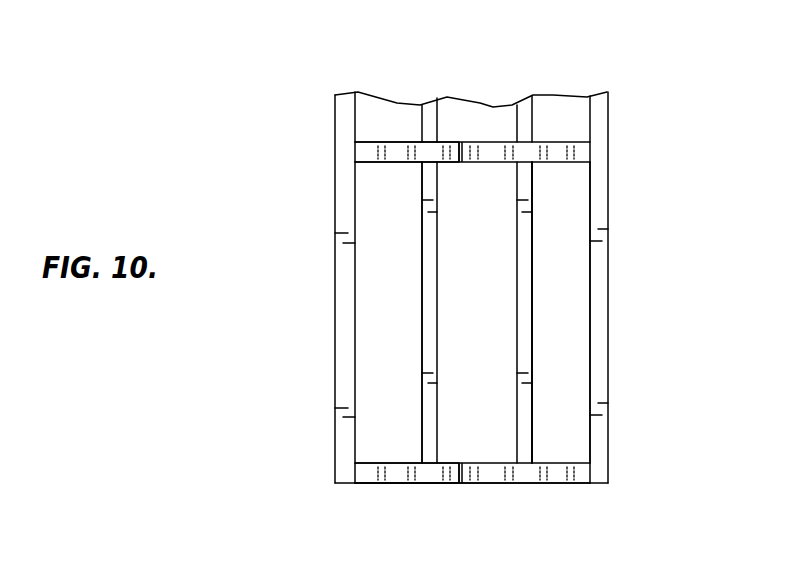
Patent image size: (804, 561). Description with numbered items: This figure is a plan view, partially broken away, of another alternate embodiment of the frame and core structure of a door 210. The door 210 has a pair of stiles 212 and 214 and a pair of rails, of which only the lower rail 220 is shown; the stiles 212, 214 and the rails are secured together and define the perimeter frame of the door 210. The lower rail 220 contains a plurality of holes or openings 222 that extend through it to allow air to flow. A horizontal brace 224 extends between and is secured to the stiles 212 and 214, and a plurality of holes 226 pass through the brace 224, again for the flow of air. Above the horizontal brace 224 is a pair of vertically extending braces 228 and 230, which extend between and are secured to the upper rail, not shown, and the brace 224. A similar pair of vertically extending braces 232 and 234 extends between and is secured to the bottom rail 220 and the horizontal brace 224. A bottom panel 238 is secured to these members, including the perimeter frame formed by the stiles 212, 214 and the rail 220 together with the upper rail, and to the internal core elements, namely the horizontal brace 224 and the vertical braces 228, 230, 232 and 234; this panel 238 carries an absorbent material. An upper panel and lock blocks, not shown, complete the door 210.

The door 210 is at (306, 119).
The stile 212 is at (598, 190).
The stile 214 is at (345, 303).
The lower rail 220 is at (525, 472).
The holes or openings 222 is at (447, 480).
The horizontal brace 224 is at (556, 140).
The holes 226 is at (408, 162).
The vertically extending brace 228 is at (514, 118).
The vertically extending brace 230 is at (417, 118).
The vertically extending brace 232 is at (532, 267).
The vertically extending brace 234 is at (422, 346).
The bottom panel 238 is at (570, 365).